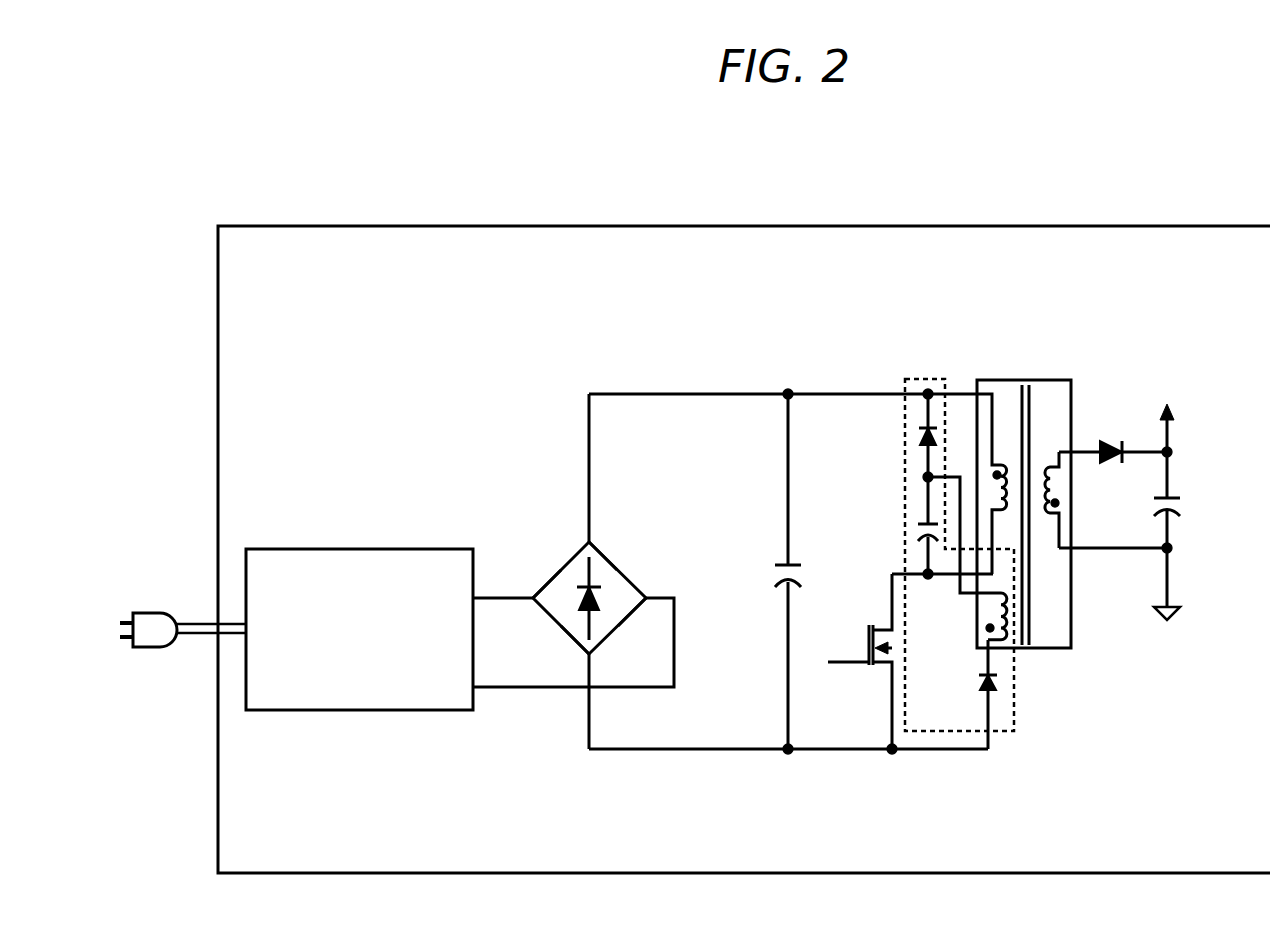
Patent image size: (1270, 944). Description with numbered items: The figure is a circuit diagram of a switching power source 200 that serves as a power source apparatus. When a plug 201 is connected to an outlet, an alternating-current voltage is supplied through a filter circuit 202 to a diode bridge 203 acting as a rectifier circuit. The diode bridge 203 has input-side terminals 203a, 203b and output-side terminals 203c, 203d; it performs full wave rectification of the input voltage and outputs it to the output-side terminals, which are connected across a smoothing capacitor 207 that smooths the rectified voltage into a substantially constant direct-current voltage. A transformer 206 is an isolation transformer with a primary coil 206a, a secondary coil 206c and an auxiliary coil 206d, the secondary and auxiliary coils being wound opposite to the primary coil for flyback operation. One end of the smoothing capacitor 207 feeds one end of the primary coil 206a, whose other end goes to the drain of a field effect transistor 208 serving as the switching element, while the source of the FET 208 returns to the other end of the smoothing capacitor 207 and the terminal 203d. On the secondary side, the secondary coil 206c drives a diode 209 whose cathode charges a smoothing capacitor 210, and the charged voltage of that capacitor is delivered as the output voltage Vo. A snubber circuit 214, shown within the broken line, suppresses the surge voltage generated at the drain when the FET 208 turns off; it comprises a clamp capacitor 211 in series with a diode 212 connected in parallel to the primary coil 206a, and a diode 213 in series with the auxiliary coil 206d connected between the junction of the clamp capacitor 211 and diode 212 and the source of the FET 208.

The switching power source 200 is at (698, 226).
The plug 201 is at (155, 648).
The filter circuit 202 is at (375, 712).
The diode bridge 203 is at (620, 568).
The input-side terminal 203a is at (538, 592).
The input-side terminal 203b is at (648, 588).
The output-side terminal 203c is at (590, 542).
The output-side terminal 203d is at (590, 655).
The transformer 206 is at (1047, 648).
The primary coil 206a is at (998, 468).
The secondary coil 206c is at (1042, 467).
The auxiliary coil 206d is at (1033, 623).
The smoothing capacitor 207 is at (772, 585).
The field effect transistor 208 is at (877, 673).
The diode 209 is at (1105, 438).
The smoothing capacitor 210 is at (1185, 503).
The clamp capacitor 211 is at (913, 530).
The diode 212 is at (917, 438).
The diode 213 is at (1005, 685).
The snubber circuit 214 is at (943, 732).